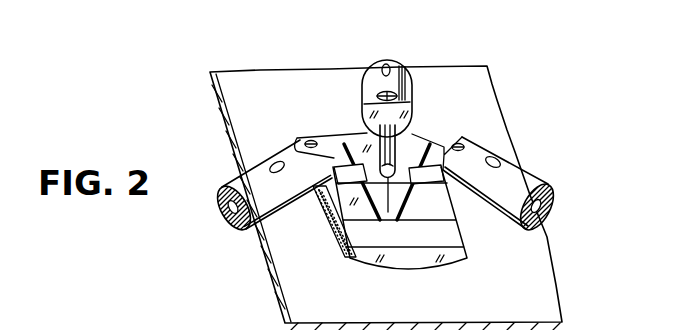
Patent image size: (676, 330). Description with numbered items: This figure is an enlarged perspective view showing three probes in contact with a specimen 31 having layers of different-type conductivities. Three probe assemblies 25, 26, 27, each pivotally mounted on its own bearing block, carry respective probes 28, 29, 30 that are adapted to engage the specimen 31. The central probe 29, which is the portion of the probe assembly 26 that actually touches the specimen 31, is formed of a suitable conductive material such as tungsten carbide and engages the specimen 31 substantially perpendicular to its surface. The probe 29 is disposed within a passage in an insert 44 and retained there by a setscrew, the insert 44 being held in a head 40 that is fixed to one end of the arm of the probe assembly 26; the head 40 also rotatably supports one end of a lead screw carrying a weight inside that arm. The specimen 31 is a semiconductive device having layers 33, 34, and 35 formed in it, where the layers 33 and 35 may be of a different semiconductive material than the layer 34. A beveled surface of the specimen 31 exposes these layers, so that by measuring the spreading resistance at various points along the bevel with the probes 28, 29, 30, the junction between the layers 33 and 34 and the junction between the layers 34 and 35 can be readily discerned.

The probe assembly 25 is at (261, 161).
The probe assembly 26 is at (387, 71).
The probe assembly 27 is at (533, 172).
The probe 28 is at (380, 220).
The probe 29 is at (391, 217).
The probe 30 is at (408, 196).
The specimen 31 is at (347, 259).
The layer 33 is at (316, 203).
The layer 34 is at (332, 213).
The layer 35 is at (336, 233).
The head 40 is at (362, 92).
The insert 44 is at (405, 136).